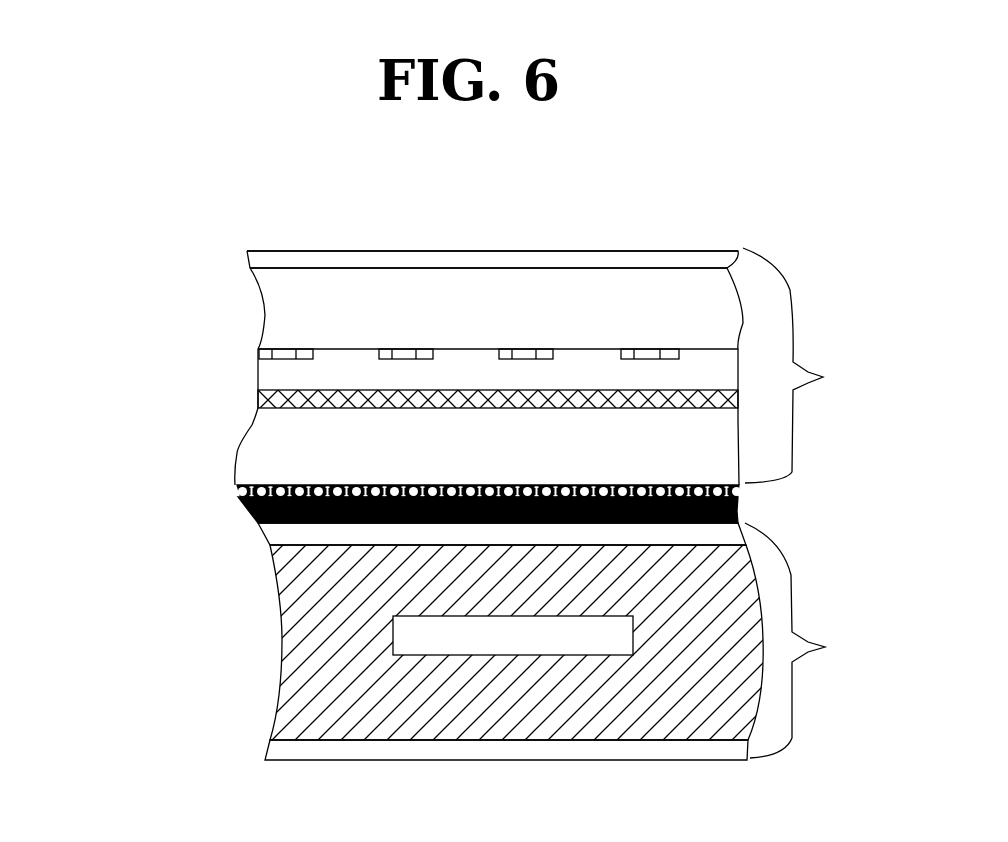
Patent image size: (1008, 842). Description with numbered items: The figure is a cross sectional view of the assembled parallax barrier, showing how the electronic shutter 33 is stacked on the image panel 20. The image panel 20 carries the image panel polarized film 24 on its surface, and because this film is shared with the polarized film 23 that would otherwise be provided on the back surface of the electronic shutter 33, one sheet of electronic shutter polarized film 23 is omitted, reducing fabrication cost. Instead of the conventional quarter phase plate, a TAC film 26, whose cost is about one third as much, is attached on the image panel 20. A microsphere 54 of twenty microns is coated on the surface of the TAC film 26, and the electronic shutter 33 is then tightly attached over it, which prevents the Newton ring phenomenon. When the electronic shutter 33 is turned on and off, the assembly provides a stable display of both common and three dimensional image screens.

The electronic shutter 33 is at (554, 366).
The polarized film 23 is at (248, 260).
The microsphere 54 is at (237, 490).
The TAC film 26 is at (252, 517).
The image panel polarized film 24 is at (266, 744).
The image panel 20 is at (468, 641).